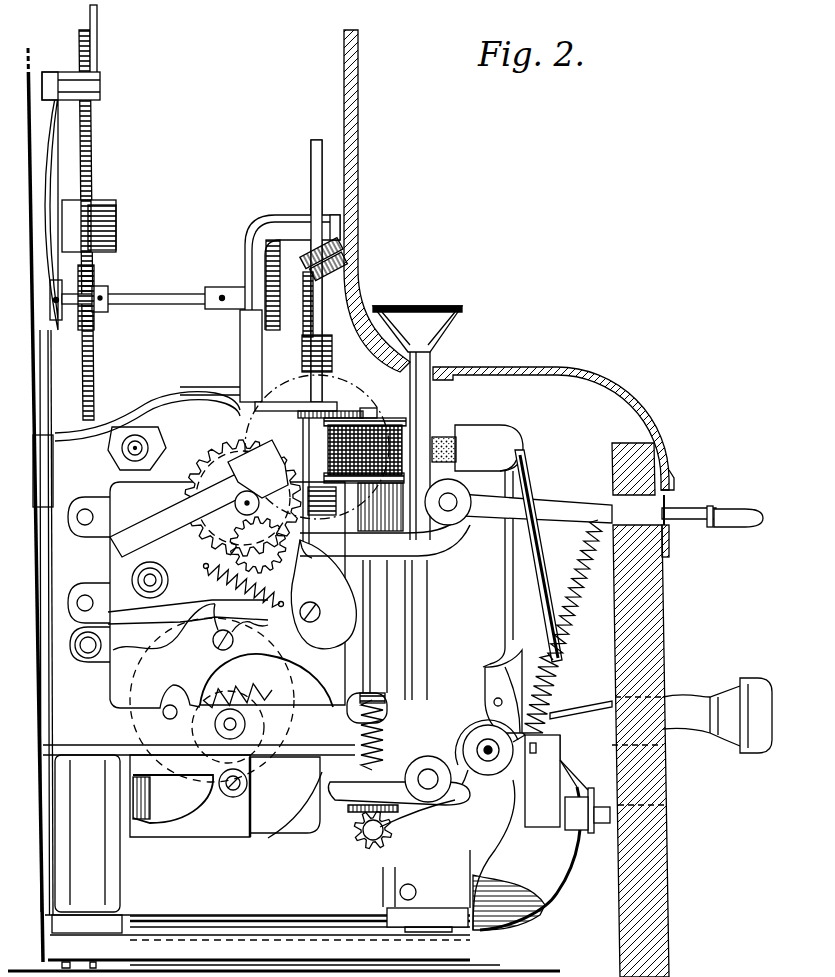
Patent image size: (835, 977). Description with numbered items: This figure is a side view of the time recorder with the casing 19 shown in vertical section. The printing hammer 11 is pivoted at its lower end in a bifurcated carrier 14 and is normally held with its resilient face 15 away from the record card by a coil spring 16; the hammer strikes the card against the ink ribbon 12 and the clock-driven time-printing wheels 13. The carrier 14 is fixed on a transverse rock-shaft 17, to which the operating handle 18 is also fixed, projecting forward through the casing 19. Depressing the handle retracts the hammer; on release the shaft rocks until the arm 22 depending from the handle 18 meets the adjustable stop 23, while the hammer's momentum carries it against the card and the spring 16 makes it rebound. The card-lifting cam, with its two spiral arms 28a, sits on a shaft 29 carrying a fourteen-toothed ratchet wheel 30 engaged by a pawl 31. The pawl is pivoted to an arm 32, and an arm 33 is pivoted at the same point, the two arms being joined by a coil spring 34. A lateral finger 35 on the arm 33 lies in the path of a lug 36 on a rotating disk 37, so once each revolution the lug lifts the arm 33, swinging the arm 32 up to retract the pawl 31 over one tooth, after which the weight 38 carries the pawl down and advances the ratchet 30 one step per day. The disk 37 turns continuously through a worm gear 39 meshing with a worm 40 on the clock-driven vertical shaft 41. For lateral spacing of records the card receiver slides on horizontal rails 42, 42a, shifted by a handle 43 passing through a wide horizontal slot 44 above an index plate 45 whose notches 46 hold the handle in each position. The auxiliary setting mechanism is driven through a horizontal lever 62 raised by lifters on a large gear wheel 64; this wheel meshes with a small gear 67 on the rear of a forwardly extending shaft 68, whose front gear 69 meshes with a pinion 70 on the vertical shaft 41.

The printing hammer 11 is at (448, 310).
The ink ribbon 12 is at (348, 420).
The time-printing wheels 13 is at (268, 390).
The bifurcated carrier 14 is at (484, 690).
The resilient face 15 is at (450, 437).
The coil spring 16 is at (548, 700).
The transverse rock-shaft 17 is at (495, 752).
The operating handle 18 is at (692, 704).
The casing 19 is at (655, 610).
The arm 22 is at (540, 822).
The adjustable stop 23 is at (572, 795).
The spiral arms 28a is at (278, 818).
The shaft 29 is at (246, 725).
The ratchet wheel 30 is at (242, 690).
The pawl 31 is at (212, 700).
The arm 32 is at (240, 640).
The arm 33 is at (170, 547).
The coil spring 34 is at (262, 590).
The lateral finger 35 is at (262, 473).
The lug 36 is at (262, 551).
The rotating disk 37 is at (275, 508).
The weight 38 is at (318, 645).
The worm gear 39 is at (246, 446).
The worm 40 is at (385, 539).
The vertical shaft 41 is at (323, 175).
The horizontal rail 42 is at (452, 506).
The horizontal rail 42a is at (430, 790).
The handle 43 is at (740, 528).
The horizontal slot 44 is at (700, 490).
The index plate 45 is at (670, 543).
The notches 46 is at (720, 505).
The horizontal lever 62 is at (97, 42).
The large gear wheel 64 is at (92, 157).
The small gear 67 is at (95, 275).
The forwardly extending shaft 68 is at (166, 306).
The gear 69 is at (312, 300).
The pinion 70 is at (334, 340).